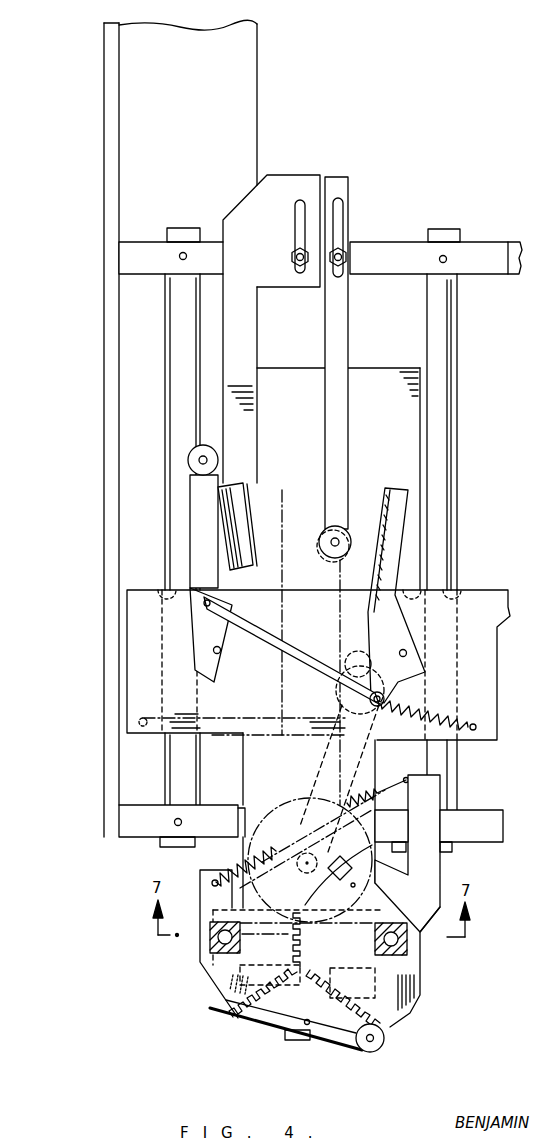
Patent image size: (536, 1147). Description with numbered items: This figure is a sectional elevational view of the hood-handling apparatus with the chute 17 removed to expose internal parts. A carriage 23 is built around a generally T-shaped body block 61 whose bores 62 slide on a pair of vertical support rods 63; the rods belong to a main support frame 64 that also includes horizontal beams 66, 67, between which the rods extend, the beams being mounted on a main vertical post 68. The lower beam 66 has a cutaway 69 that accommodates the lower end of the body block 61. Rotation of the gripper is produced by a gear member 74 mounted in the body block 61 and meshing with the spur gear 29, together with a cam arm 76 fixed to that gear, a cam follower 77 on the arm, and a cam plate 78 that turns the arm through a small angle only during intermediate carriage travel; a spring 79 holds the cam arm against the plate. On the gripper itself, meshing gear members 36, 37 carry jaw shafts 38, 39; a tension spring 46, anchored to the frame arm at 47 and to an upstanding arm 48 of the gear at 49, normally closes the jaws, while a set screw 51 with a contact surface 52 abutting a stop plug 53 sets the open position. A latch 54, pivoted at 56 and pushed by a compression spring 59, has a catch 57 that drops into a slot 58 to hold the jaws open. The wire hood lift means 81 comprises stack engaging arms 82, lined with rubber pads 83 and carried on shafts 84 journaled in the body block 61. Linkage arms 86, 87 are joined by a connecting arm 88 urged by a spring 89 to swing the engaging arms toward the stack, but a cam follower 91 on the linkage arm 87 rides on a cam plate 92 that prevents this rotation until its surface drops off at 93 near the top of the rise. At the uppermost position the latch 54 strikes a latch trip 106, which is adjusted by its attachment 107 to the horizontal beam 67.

The chute 17 is at (290, 552).
The carriage 23 is at (118, 680).
The spur gear 29 is at (325, 953).
The gear member 36 is at (209, 966).
The gear member 37 is at (421, 985).
The jaw shaft 38 is at (216, 938).
The jaw shaft 39 is at (408, 941).
The spring 46 is at (273, 840).
The spring attachment point 47 is at (407, 779).
The upstanding arm 48 is at (202, 896).
The spring attachment point 49 is at (215, 880).
The set screw 51 is at (409, 859).
The contact surface 52 is at (397, 841).
The stop plug 53 is at (358, 872).
The latch 54 is at (350, 1046).
The latch pivot 56 is at (306, 1025).
The catch 57 is at (380, 1049).
The slot 58 is at (414, 1013).
The compression spring 59 is at (211, 990).
The body block 61 is at (497, 676).
The bores 62 is at (170, 583).
The vertical support rods 63 is at (173, 330).
The main support frame 64 is at (112, 234).
The horizontal beam 66 is at (119, 821).
The horizontal beam 67 is at (127, 259).
The main vertical beam 68 is at (104, 490).
The cutaway 69 is at (235, 818).
The gear member 74 is at (324, 928).
The cam arm 76 is at (324, 764).
The cam follower 77 is at (372, 656).
The cam plate 78 is at (370, 645).
The spring 79 is at (214, 718).
The wire hood lift means 81 is at (412, 548).
The stack engaging arms 82 is at (243, 551).
The rubber pads 83 is at (251, 521).
The shafts 84 is at (222, 651).
The linkage arm 86 is at (386, 700).
The linkage arm 87 is at (190, 543).
The connecting arm 88 is at (288, 651).
The spring 89 is at (450, 717).
The cam follower 91 is at (189, 461).
The cam plate 92 is at (218, 403).
The cam plate drop-off 93 is at (244, 193).
The latch trip 106 is at (334, 556).
The attachment 107 is at (348, 262).